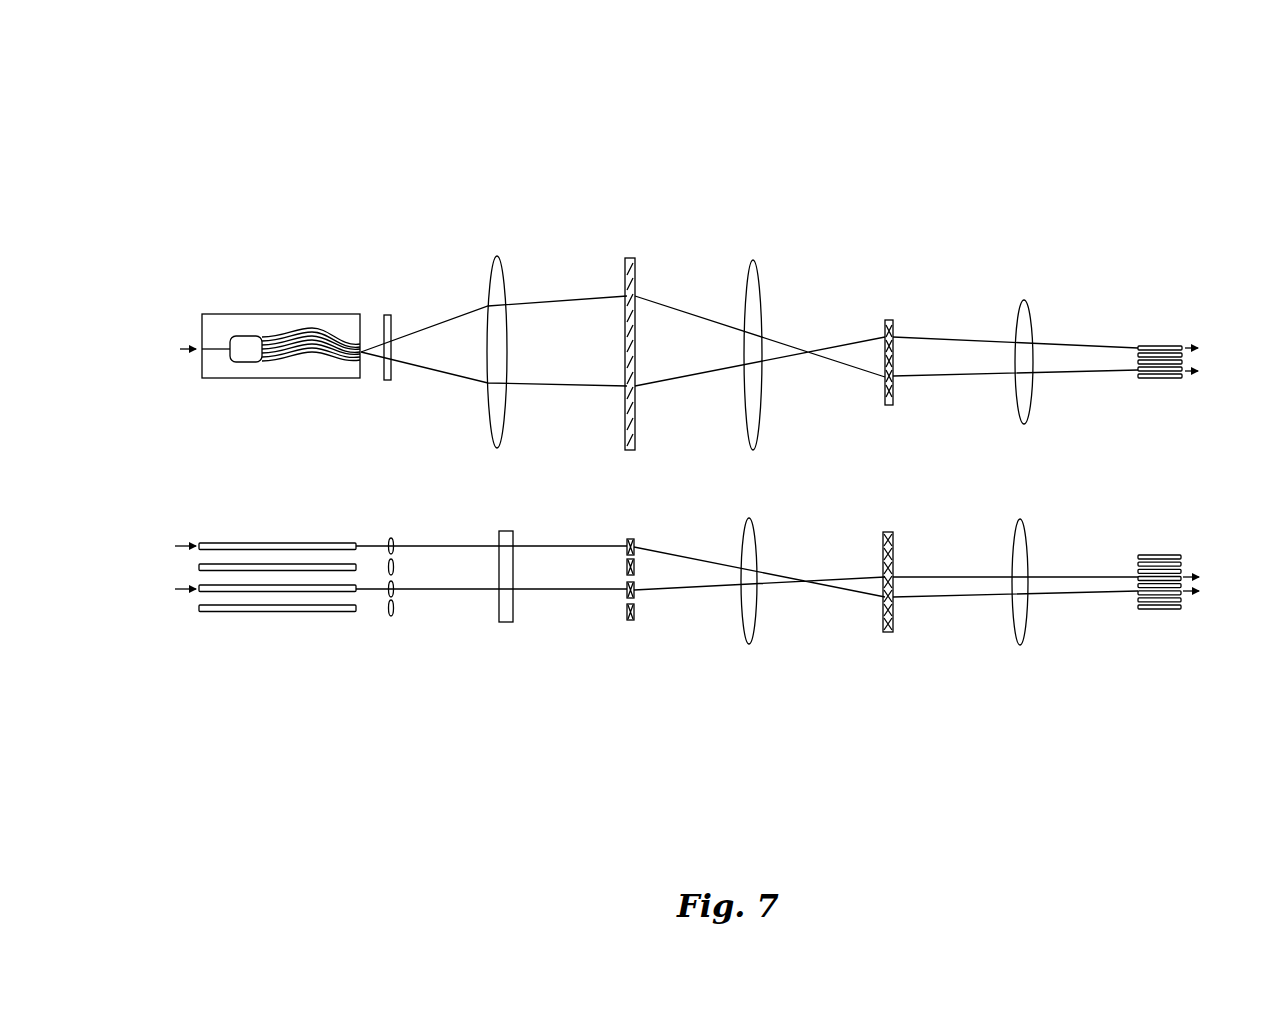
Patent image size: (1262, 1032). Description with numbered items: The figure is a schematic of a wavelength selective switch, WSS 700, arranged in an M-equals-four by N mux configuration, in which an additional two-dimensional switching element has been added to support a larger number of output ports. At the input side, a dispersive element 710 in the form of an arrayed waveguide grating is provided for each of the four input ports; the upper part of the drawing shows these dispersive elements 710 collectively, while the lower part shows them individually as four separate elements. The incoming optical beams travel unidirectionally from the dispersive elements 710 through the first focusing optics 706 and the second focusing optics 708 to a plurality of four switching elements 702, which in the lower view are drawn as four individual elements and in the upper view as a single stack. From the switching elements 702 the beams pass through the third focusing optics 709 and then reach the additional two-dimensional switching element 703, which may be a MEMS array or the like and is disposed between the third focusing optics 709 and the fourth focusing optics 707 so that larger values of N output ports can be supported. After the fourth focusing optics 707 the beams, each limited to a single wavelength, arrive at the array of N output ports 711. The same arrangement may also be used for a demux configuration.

The WSS 700 is at (824, 110).
The dispersive element 710 is at (282, 314).
The first focusing optics 706 is at (388, 315).
The second focusing optics 708 is at (498, 258).
The switching element 702 is at (634, 262).
The third focusing optics 709 is at (755, 262).
The 2D switching element 703 is at (891, 320).
The fourth focusing optics 707 is at (1025, 302).
The output ports 711 is at (1155, 348).